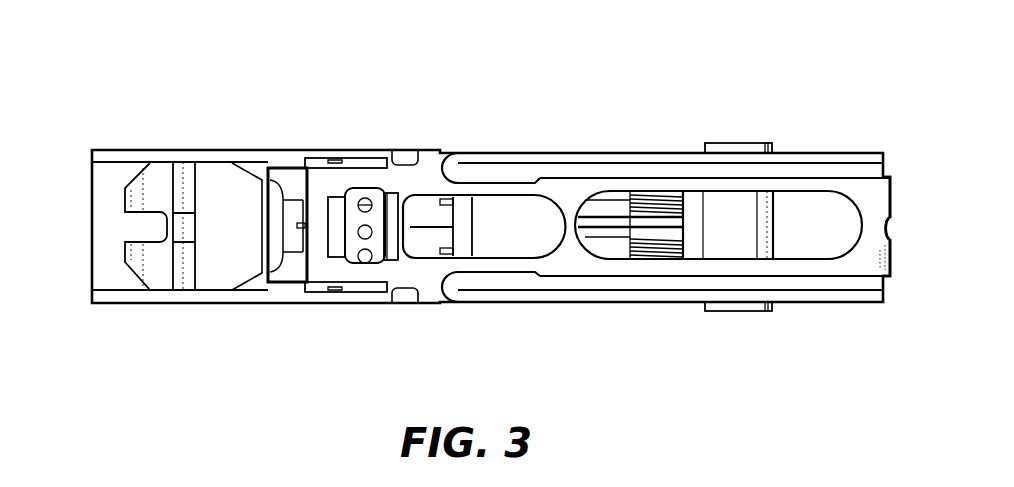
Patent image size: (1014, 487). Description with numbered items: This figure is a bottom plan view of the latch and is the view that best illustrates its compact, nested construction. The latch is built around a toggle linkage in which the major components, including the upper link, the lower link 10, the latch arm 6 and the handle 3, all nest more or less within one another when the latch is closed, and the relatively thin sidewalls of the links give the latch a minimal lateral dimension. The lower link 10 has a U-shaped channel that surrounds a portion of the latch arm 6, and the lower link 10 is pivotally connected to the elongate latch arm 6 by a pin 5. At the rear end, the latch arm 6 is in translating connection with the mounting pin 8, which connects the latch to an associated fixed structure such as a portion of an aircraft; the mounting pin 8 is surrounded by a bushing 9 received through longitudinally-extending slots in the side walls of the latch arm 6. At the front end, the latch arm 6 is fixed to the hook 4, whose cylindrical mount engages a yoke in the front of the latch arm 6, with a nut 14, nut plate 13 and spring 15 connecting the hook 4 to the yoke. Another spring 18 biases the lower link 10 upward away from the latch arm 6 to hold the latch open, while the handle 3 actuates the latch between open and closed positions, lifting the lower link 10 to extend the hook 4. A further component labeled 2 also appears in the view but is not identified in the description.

The drive housing 2 is at (287, 185).
The handle 3 is at (121, 150).
The hook 4 is at (157, 177).
The pin 5 is at (655, 188).
The latch arm 6 is at (872, 213).
The mounting pin 8 is at (740, 143).
The bushing 9 is at (744, 218).
The lower link 10 is at (507, 230).
The nut plate 13 is at (332, 218).
The nut 14 is at (384, 183).
The spring 15 is at (397, 196).
The spring 18 is at (608, 223).